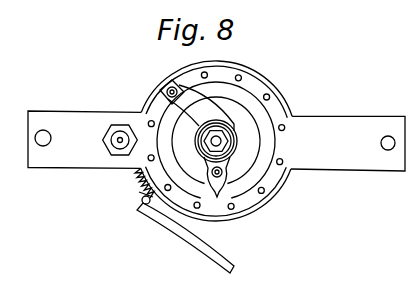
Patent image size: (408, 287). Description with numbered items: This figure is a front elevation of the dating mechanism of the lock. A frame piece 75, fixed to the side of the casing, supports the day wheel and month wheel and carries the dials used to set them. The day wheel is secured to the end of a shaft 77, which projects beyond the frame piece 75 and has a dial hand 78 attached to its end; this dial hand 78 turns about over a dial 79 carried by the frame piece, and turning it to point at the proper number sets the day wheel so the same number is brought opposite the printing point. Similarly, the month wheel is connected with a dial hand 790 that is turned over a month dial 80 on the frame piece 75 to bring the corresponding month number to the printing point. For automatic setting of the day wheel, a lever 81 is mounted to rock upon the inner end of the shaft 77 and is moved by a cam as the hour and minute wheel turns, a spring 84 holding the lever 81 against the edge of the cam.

The frame piece 75 is at (361, 166).
The shaft 77 is at (218, 141).
The dial hand 78 is at (268, 205).
The dial 79 is at (289, 156).
The month dial 80 is at (226, 89).
The lever 81 is at (160, 233).
The spring 84 is at (130, 193).
The dial hand 790 is at (163, 88).